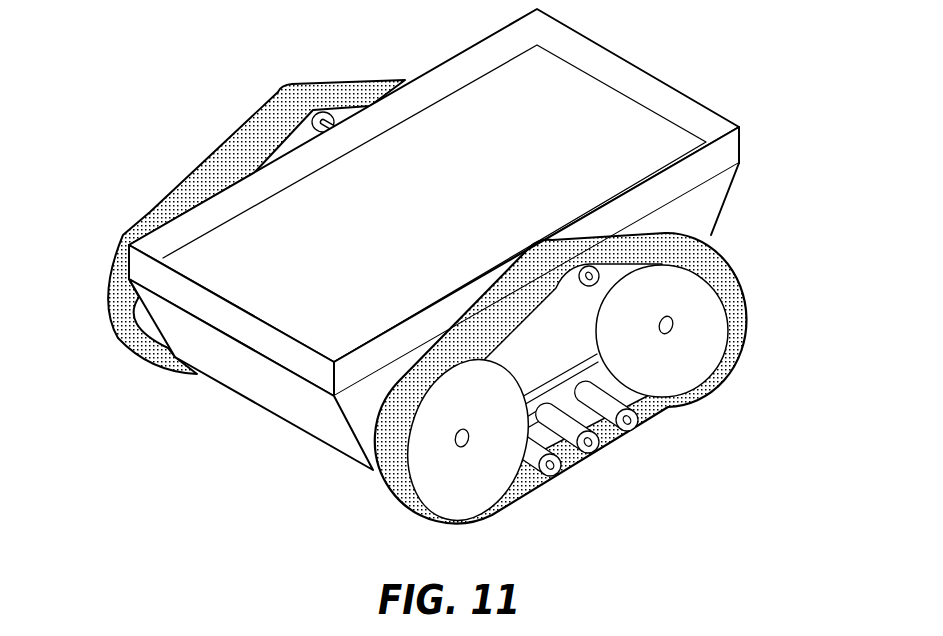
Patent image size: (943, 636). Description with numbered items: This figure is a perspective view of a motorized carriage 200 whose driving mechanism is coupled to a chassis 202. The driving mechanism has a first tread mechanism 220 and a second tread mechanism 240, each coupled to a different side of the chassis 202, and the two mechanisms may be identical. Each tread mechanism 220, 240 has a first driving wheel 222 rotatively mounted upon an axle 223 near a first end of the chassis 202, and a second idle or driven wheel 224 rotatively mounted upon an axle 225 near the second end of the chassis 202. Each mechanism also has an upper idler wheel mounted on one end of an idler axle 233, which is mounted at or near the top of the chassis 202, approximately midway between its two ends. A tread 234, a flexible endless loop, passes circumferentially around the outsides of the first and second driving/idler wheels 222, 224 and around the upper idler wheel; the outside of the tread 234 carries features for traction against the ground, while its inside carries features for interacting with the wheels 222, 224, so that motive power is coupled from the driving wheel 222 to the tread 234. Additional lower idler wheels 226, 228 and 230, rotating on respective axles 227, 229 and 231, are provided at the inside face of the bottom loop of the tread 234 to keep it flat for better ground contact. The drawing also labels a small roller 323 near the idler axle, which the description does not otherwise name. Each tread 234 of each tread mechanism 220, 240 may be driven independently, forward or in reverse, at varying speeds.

The motorized carriage 200 is at (424, 280).
The chassis 202 is at (270, 413).
The first tread mechanism 220 is at (550, 396).
The first driving wheel 222 is at (494, 452).
The axle 223 is at (470, 444).
The second idle or driven wheel 224 is at (699, 353).
The axle 225 is at (676, 333).
The lower idler wheel 226 is at (602, 465).
The axle 227 is at (553, 477).
The lower idler wheel 228 is at (599, 460).
The axle 229 is at (592, 453).
The lower idler wheel 230 is at (654, 428).
The axle 231 is at (632, 431).
The idler axle 233 is at (478, 214).
The tread 234 is at (394, 502).
The second tread mechanism 240 is at (90, 338).
The idler roller 323 is at (715, 262).